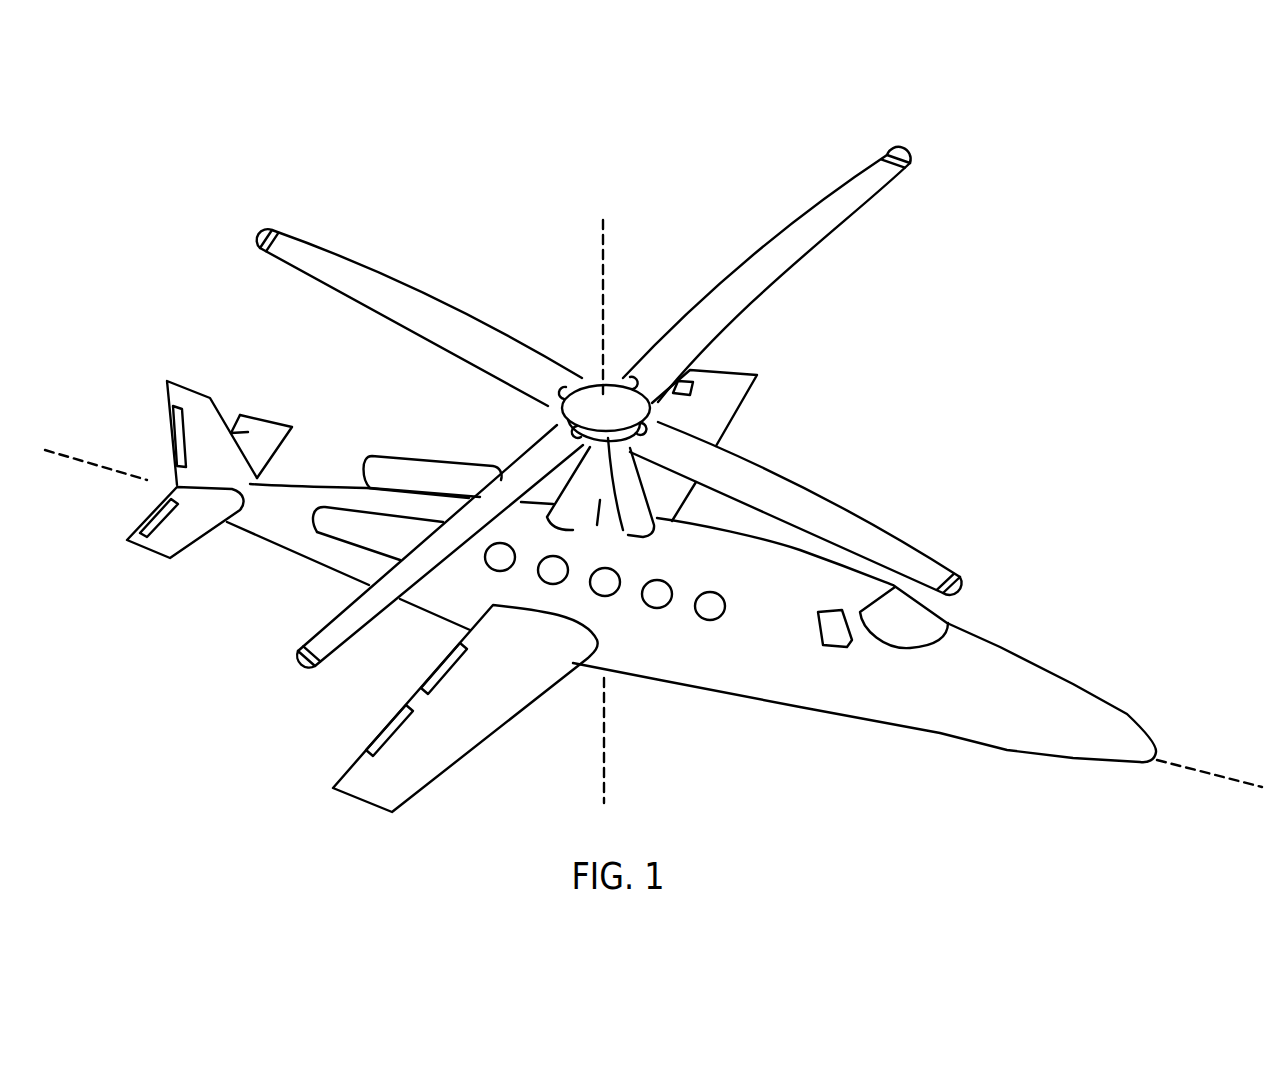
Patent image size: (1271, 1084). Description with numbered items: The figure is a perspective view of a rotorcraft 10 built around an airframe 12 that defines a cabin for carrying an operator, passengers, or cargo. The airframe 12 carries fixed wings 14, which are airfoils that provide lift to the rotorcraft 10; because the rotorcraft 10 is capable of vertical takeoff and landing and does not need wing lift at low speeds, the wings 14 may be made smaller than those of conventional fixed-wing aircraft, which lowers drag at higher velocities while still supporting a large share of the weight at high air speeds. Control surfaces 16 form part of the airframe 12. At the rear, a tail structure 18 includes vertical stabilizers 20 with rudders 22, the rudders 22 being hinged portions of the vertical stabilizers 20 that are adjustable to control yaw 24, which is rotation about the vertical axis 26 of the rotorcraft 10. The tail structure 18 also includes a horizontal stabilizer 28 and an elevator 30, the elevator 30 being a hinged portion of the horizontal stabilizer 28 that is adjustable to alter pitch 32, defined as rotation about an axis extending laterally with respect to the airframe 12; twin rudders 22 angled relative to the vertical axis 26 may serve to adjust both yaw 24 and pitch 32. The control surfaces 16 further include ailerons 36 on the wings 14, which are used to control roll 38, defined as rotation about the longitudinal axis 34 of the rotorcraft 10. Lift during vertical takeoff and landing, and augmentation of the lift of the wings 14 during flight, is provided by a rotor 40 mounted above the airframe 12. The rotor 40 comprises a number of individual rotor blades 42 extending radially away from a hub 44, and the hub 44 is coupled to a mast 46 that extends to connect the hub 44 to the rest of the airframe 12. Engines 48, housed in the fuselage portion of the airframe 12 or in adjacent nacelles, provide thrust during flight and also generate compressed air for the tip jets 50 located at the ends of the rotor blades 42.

The rotorcraft 10 is at (977, 387).
The airframe 12 is at (758, 685).
The fixed wings 14 is at (457, 743).
The control surfaces 16 is at (330, 695).
The tail structure 18 is at (150, 565).
The vertical stabilizer 20 is at (193, 403).
The rudder 22 is at (177, 437).
The yaw 24 is at (641, 291).
The vertical axis 26 is at (603, 238).
The horizontal stabilizer 28 is at (185, 530).
The elevator 30 is at (155, 517).
The pitch 32 is at (1118, 644).
The longitudinal axis 34 is at (1197, 767).
The ailerons 36 is at (457, 657).
The roll 38 is at (1252, 760).
The rotor 40 is at (620, 369).
The rotor blades 42 is at (384, 286).
The hub 44 is at (630, 537).
The mast 46 is at (597, 525).
The engines 48 is at (413, 467).
The tip jets 50 is at (266, 230).